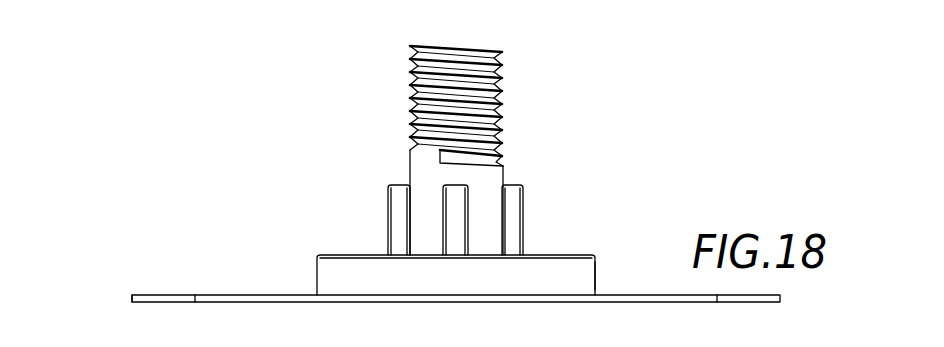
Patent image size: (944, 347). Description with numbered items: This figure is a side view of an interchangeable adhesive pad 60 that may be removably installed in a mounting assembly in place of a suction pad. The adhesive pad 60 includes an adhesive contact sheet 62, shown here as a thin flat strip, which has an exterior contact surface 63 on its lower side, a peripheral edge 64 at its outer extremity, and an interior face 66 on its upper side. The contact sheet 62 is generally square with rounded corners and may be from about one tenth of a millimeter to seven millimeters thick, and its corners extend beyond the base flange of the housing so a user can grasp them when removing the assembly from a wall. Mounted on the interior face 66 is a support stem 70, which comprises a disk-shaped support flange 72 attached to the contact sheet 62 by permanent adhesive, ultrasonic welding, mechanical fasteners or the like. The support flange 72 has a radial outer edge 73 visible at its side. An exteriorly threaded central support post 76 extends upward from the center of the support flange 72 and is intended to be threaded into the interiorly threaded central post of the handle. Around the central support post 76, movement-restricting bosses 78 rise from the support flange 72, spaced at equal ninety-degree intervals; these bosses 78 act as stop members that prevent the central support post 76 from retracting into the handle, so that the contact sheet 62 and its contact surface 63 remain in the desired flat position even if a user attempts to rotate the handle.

The adhesive pad 60 is at (222, 121).
The adhesive contact sheet 62 is at (175, 298).
The exterior contact surface 63 is at (247, 303).
The peripheral edge 64 is at (130, 300).
The interior face 66 is at (282, 293).
The support stem 70 is at (502, 159).
The support flange 72 is at (553, 272).
The radial outer edge 73 is at (597, 273).
The central support post 76 is at (487, 78).
The movement-restricting bosses 78 is at (455, 202).